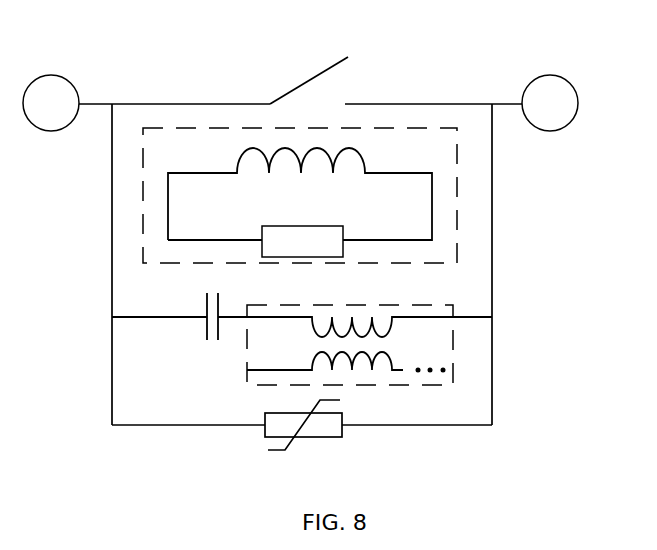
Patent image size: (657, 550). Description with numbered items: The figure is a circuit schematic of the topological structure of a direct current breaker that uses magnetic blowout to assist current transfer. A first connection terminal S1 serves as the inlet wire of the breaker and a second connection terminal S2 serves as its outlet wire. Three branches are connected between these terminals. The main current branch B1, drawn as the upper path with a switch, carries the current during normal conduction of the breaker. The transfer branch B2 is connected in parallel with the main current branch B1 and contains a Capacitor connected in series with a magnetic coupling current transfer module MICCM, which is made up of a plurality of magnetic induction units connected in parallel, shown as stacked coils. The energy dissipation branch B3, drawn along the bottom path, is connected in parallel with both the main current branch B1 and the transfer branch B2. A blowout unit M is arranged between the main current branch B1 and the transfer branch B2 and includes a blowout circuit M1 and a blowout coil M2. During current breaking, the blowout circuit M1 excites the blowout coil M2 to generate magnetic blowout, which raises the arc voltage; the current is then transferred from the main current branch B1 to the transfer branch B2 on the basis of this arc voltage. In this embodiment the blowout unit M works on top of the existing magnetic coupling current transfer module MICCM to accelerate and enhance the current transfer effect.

The first connection terminal S1 is at (51, 103).
The second connection terminal S2 is at (550, 103).
The main current branch B1 is at (141, 104).
The transfer branch B2 is at (473, 315).
The energy dissipation branch B3 is at (425, 428).
The blowout unit M is at (346, 195).
The blowout circuit M1 is at (255, 243).
The blowout coil M2 is at (360, 152).
The capacitor Capacitor is at (205, 325).
The magnetic coupling current transfer module MICCM is at (433, 383).